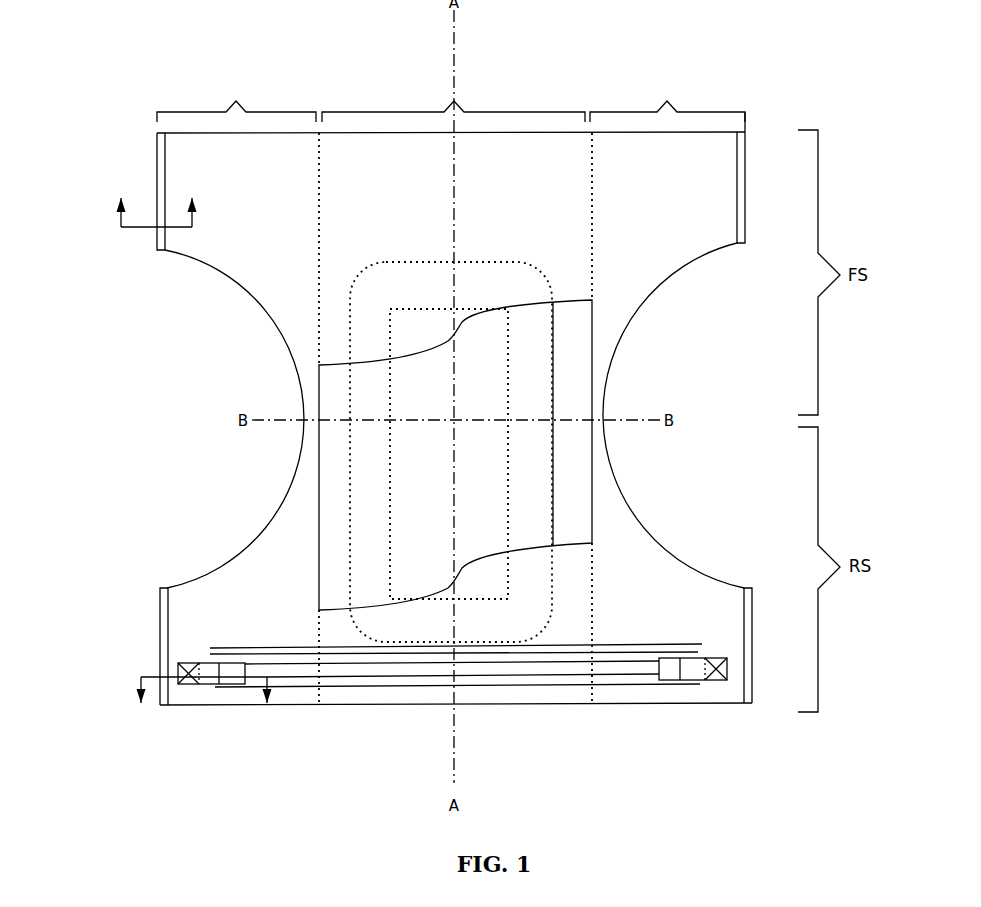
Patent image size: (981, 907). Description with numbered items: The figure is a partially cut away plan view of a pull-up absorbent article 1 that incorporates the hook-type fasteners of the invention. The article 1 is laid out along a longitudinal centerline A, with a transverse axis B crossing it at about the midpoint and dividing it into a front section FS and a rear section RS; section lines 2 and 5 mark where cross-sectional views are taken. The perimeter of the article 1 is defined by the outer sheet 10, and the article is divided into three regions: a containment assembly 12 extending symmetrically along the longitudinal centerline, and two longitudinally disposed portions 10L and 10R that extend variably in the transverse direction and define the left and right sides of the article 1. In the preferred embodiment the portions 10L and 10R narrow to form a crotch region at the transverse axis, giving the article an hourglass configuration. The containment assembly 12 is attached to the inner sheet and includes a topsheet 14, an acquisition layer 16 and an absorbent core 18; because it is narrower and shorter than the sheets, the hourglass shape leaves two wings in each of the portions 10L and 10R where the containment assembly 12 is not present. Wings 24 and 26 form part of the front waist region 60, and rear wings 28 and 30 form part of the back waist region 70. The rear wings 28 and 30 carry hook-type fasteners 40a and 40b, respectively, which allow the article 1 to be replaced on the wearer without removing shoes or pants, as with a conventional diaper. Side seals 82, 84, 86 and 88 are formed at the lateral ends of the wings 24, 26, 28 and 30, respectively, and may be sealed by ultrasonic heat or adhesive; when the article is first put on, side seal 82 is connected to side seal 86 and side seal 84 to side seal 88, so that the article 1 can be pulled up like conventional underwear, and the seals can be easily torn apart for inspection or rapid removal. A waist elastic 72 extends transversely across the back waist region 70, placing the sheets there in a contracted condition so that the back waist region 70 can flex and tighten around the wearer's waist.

The pull-up absorbent article 1 is at (142, 328).
The outer sheet 10 is at (648, 223).
The left longitudinal portion 10L is at (236, 97).
The right longitudinal portion 10R is at (667, 94).
The containment assembly 12 is at (453, 358).
The topsheet 14 is at (572, 490).
The acquisition layer 16 is at (488, 388).
The absorbent core 18 is at (533, 468).
The wing 24 is at (218, 198).
The wing 26 is at (643, 191).
The rear wing 28 is at (255, 608).
The rear wing 30 is at (645, 612).
The hook-type fastener 40a is at (178, 672).
The hook-type fastener 40b is at (727, 669).
The front waist region 60 is at (392, 140).
The back waist region 70 is at (362, 703).
The waist elastic 72 is at (552, 675).
The side seal 82 is at (160, 153).
The side seal 84 is at (745, 215).
The side seal 86 is at (168, 623).
The side seal 88 is at (744, 634).
The section line 2- 2 is at (157, 202).
The section line 5- 5 is at (204, 703).